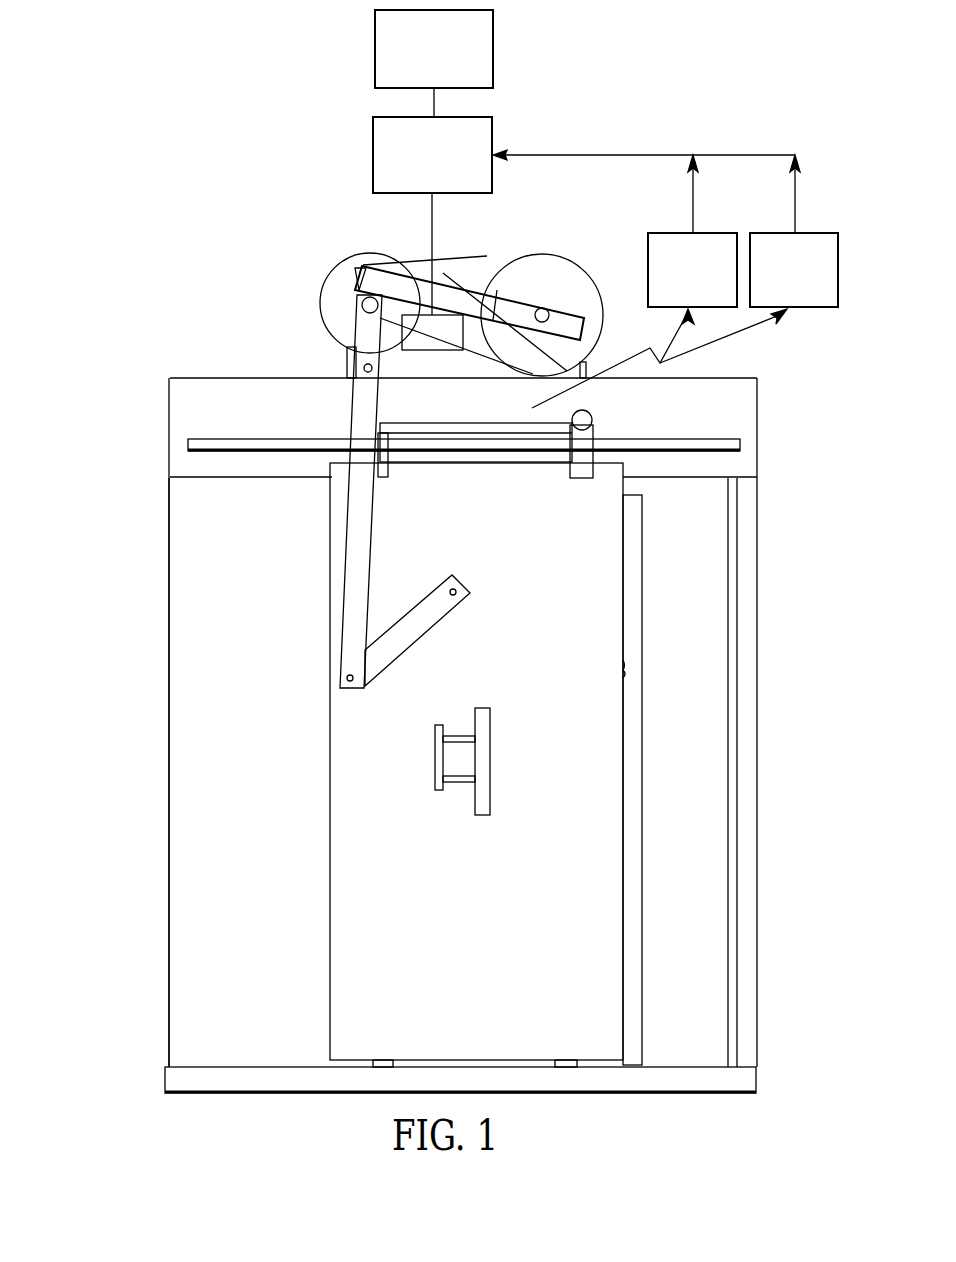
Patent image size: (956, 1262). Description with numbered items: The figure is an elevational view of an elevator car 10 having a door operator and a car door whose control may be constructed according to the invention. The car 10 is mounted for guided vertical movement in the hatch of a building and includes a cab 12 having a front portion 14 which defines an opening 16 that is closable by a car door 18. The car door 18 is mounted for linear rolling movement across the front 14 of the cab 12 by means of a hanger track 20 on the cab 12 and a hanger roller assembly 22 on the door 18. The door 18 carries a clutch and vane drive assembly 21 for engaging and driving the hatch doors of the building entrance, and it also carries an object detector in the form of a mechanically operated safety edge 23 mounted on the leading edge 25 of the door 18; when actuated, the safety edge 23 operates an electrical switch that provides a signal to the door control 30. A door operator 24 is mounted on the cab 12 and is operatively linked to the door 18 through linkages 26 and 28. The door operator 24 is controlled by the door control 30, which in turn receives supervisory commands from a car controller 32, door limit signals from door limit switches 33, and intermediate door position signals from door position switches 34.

The elevator car 10 is at (812, 744).
The cab 12 is at (745, 420).
The front portion 14 is at (196, 598).
The opening 16 is at (695, 557).
The car door 18 is at (330, 830).
The hanger track 20 is at (688, 440).
The clutch and vane drive assembly 21 is at (460, 727).
The hanger roller assembly 22 is at (593, 414).
The safety edge 23 is at (643, 732).
The door operator 24 is at (565, 268).
The leading edge 25 is at (632, 668).
The linkage 26 is at (364, 402).
The linkage 28 is at (422, 625).
The door control 30 is at (372, 137).
The car controller 32 is at (493, 45).
The door limit switches 33 is at (648, 258).
The door position switches 34 is at (775, 233).